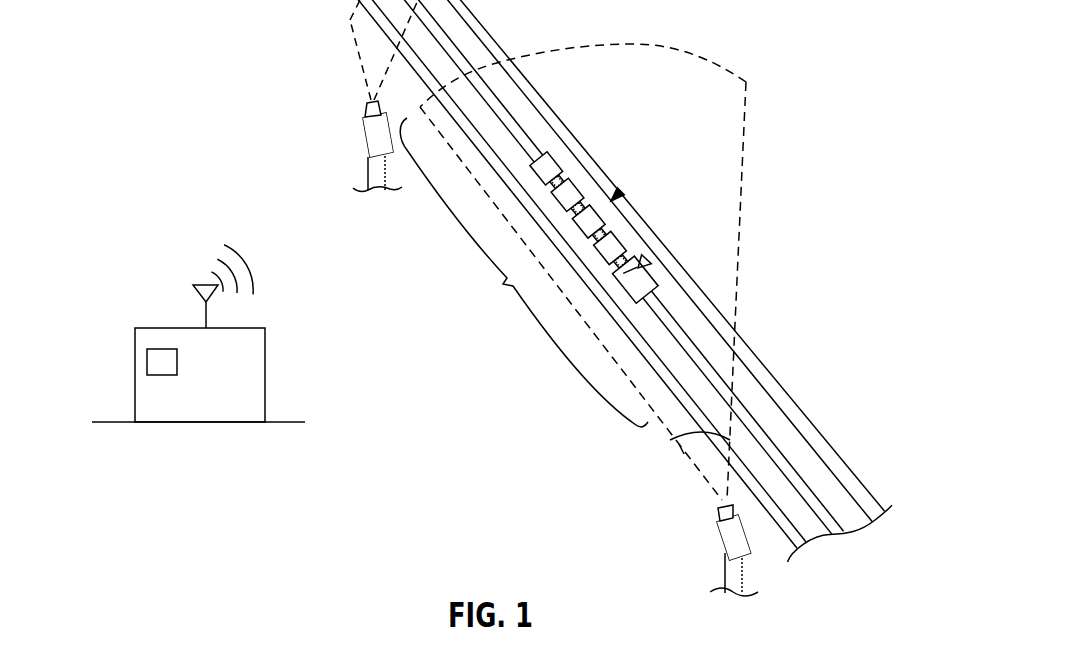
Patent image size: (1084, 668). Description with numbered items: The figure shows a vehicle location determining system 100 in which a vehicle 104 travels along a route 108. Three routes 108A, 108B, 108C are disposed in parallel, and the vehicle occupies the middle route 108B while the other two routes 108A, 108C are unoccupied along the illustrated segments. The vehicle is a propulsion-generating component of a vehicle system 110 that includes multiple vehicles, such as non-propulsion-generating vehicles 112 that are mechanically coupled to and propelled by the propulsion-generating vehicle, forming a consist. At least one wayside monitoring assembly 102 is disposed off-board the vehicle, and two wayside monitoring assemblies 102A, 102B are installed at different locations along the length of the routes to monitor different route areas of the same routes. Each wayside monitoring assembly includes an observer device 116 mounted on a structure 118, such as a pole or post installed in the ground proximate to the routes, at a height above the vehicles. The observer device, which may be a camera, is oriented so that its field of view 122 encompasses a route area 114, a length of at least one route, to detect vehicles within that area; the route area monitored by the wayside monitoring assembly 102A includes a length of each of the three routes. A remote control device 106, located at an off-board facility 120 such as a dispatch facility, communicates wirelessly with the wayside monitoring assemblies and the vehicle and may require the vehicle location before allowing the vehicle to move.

The vehicle location determining system 100 is at (178, 38).
The wayside monitoring assembly 102 is at (413, 184).
The wayside monitoring assembly 102A is at (697, 549).
The wayside monitoring assembly 102B is at (318, 145).
The vehicle 104 is at (642, 277).
The remote control device 106 is at (147, 362).
The route 108 is at (654, 289).
The route 108A is at (782, 505).
The middle route 108B is at (785, 450).
The route 108C is at (787, 393).
The vehicle system 110 is at (620, 192).
The non-propulsion-generating vehicle 112 is at (550, 167).
The route area 114 is at (524, 272).
The observer device 116 is at (363, 128).
The structure 118 is at (373, 170).
The off-board facility 120 is at (175, 333).
The field of view 122 is at (670, 440).